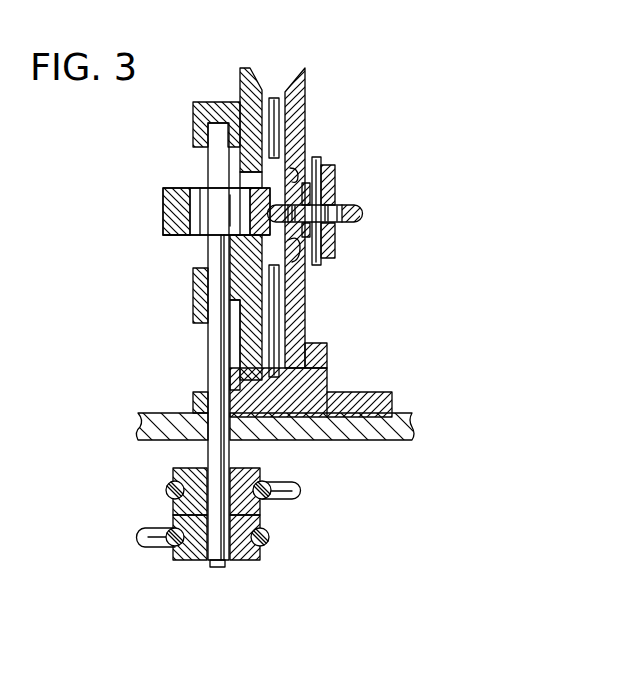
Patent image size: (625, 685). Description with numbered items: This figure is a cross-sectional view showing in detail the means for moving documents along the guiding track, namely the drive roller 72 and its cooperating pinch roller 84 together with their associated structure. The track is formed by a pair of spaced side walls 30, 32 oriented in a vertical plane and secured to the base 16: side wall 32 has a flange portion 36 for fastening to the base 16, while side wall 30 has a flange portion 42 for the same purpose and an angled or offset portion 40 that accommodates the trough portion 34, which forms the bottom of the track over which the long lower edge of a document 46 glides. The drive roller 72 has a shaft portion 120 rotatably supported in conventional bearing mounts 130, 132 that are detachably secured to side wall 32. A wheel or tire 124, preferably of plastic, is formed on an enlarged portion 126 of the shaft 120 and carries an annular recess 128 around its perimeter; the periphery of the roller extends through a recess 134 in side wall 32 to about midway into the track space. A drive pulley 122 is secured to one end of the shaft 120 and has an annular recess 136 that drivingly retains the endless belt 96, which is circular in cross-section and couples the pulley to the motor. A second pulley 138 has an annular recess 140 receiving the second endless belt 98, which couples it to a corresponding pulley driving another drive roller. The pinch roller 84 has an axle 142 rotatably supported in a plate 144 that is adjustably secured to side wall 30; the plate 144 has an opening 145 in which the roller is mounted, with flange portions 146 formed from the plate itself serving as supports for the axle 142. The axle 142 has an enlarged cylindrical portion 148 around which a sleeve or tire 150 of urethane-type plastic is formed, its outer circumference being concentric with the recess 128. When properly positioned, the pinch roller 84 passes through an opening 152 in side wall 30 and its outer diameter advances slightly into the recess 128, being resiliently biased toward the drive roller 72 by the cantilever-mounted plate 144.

The base 16 is at (412, 437).
The side wall 30 is at (301, 72).
The side wall 32 is at (243, 68).
The trough portion 34 is at (290, 420).
The flange portion 36 is at (193, 400).
The angled or offset portion 40 is at (320, 360).
The flange portion 42 is at (378, 392).
The document 46 is at (273, 97).
The drive roller 72 is at (170, 240).
The pinch roller 84 is at (367, 216).
The endless belt 96 is at (166, 493).
The second endless belt 98 is at (147, 528).
The shaft portion 120 is at (208, 336).
The drive pulley 122 is at (185, 468).
The wheel or tire 124 is at (165, 193).
The enlarged portion 126 is at (203, 192).
The annular recess 128 is at (166, 213).
The bearing mount 130 is at (193, 108).
The bearing mount 132 is at (193, 305).
The recess 134 is at (255, 248).
The annular recess 136 is at (268, 500).
The second pulley 138 is at (250, 560).
The annular recess 140 is at (180, 528).
The axle 142 is at (318, 158).
The plate 144 is at (335, 250).
The opening 145 is at (335, 190).
The flange portion 146 is at (293, 168).
The enlarged cylindrical portion 148 is at (335, 226).
The sleeve or tire 150 is at (357, 207).
The opening 152 is at (299, 256).